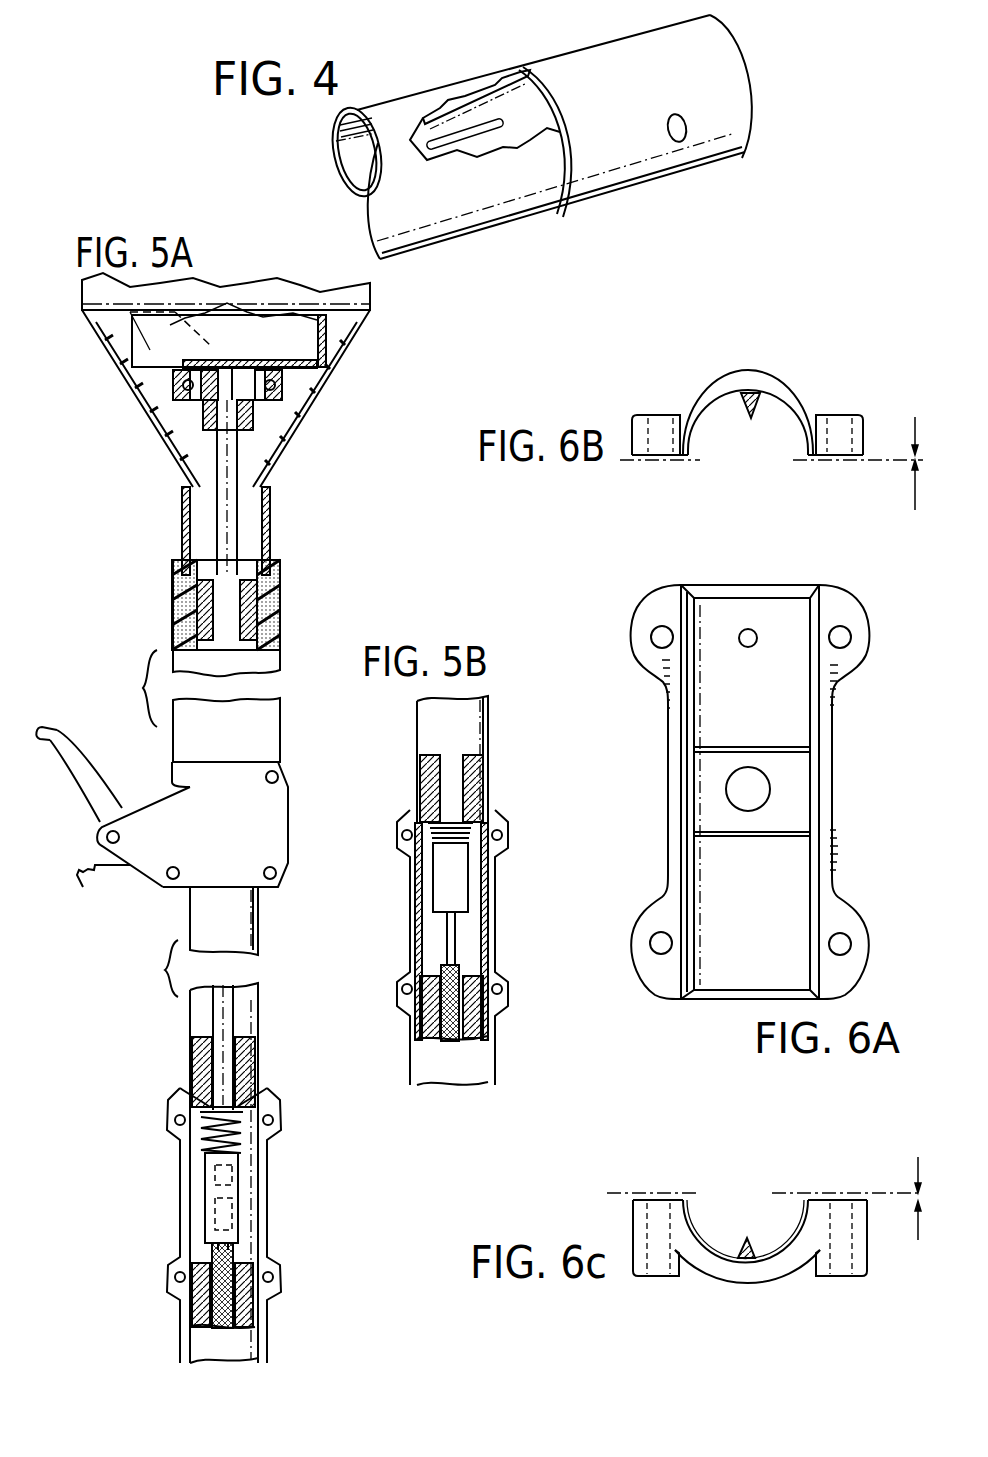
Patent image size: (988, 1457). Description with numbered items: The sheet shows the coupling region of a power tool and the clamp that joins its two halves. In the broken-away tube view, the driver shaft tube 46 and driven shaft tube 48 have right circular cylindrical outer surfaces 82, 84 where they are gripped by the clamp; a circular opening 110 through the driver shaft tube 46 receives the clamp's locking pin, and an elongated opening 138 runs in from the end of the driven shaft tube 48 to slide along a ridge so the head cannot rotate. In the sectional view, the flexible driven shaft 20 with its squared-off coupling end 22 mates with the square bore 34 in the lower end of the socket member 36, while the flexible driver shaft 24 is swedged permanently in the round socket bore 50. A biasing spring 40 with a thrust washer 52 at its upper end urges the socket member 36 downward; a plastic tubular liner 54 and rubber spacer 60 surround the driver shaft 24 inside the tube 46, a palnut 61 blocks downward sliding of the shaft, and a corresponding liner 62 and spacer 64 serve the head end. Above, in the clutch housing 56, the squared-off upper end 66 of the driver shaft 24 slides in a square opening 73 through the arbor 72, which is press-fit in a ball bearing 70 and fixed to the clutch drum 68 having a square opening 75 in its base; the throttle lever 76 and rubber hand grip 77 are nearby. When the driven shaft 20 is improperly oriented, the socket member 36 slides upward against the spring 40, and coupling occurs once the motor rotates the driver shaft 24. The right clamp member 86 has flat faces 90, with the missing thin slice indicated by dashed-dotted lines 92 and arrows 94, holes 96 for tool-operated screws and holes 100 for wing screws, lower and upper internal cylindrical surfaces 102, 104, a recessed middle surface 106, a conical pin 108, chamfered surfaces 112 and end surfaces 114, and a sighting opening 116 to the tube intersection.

In FIG. 5A, the flexible driven shaft 20 is at (230, 1270).
In FIG. 5B, the flexible driven shaft 20 is at (452, 985).
In FIG. 5A, the squared-off coupling end 22 is at (233, 1225).
In FIG. 5B, the squared-off coupling end 22 is at (460, 937).
In FIG. 5A, the flexible driver shaft 24 is at (230, 535).
In FIG. 5B, the flexible driver shaft 24 is at (448, 780).
In FIG. 5A, the square bore 34 is at (218, 1210).
In FIG. 5A, the socket member 36 is at (240, 1180).
In FIG. 5B, the socket member 36 is at (448, 882).
In FIG. 5A, the biasing spring 40 is at (240, 1125).
In FIG. 5B, the biasing spring 40 is at (470, 836).
In FIG. 4, the driver shaft tube 46 is at (722, 57).
In FIG. 5A, the driver shaft tube 46 is at (264, 556).
In FIG. 5B, the driver shaft tube 46 is at (425, 722).
In FIG. 4, the driven shaft tube 48 is at (417, 103).
In FIG. 5A, the driven shaft tube 48 is at (250, 1348).
In FIG. 5B, the driven shaft tube 48 is at (460, 1060).
In FIG. 5A, the round socket bore 50 is at (218, 1172).
In FIG. 5A, the thrust washer 52 is at (248, 1122).
In FIG. 5B, the thrust washer 52 is at (433, 832).
In FIG. 5A, the tubular liner 54 is at (262, 600).
In FIG. 5B, the tubular liner 54 is at (468, 797).
In FIG. 5A, the clutch housing 56 is at (284, 376).
In FIG. 5A, the spacer 60 is at (185, 603).
In FIG. 5B, the spacer 60 is at (428, 790).
In FIG. 5A, the palnut 61 is at (185, 555).
In FIG. 5A, the operating head end tubular liner 62 is at (195, 1312).
In FIG. 5B, the operating head end tubular liner 62 is at (475, 1015).
In FIG. 5A, the spacer 64 is at (250, 1310).
In FIG. 5B, the spacer 64 is at (428, 1015).
In FIG. 5A, the upper end of the driver shaft 66 is at (234, 380).
In FIG. 5A, the clutch drum 68 is at (326, 343).
In FIG. 5A, the ball bearing 70 is at (276, 385).
In FIG. 5A, the arbor 72 is at (256, 422).
In FIG. 5A, the square opening 73 is at (217, 410).
In FIG. 5A, the square opening 75 is at (226, 365).
In FIG. 5A, the throttle lever 76 is at (52, 733).
In FIG. 5A, the hand grip 77 is at (262, 655).
In FIG. 4, the cylindrically-shaped outer surface 82 is at (617, 65).
In FIG. 4, the cylindrically-shaped outer surface 84 is at (461, 194).
In FIG. 6A, the right clamp member 86 is at (668, 782).
In FIG. 6B, the right clamp member 86 is at (752, 370).
In FIG. 6C, the right clamp member 86 is at (670, 1277).
In FIG. 6B, the flat faces 90 is at (680, 460).
In FIG. 6C, the flat faces 90 is at (640, 1200).
In FIG. 6B, the dashed-dotted lines 92 is at (658, 462).
In FIG. 6C, the dashed-dotted lines 92 is at (675, 1193).
In FIG. 6B, the arrows 94 is at (930, 460).
In FIG. 6C, the arrows 94 is at (925, 1200).
In FIG. 6A, the holes 96 is at (846, 632).
In FIG. 6B, the holes 96 is at (652, 430).
In FIG. 6A, the holes 100 is at (658, 950).
In FIG. 6C, the holes 100 is at (645, 1237).
In FIG. 6A, the lower cylindrically-shaped internal surface 102 is at (740, 925).
In FIG. 6A, the upper cylindrically-shaped internal surface 104 is at (730, 695).
In FIG. 6A, the middle cylindrically-shaped internal surface 106 is at (712, 810).
In FIG. 6A, the conical pin 108 is at (754, 632).
In FIG. 6B, the conical pin 108 is at (747, 408).
In FIG. 6C, the conical pin 108 is at (748, 1240).
In FIG. 4, the circular opening 110 is at (685, 133).
In FIG. 6A, the chamfered surfaces 112 is at (688, 618).
In FIG. 6A, the chamfered end surfaces 114 is at (772, 590).
In FIG. 6A, the circular opening 116 is at (752, 780).
In FIG. 4, the elongated opening 138 is at (480, 127).